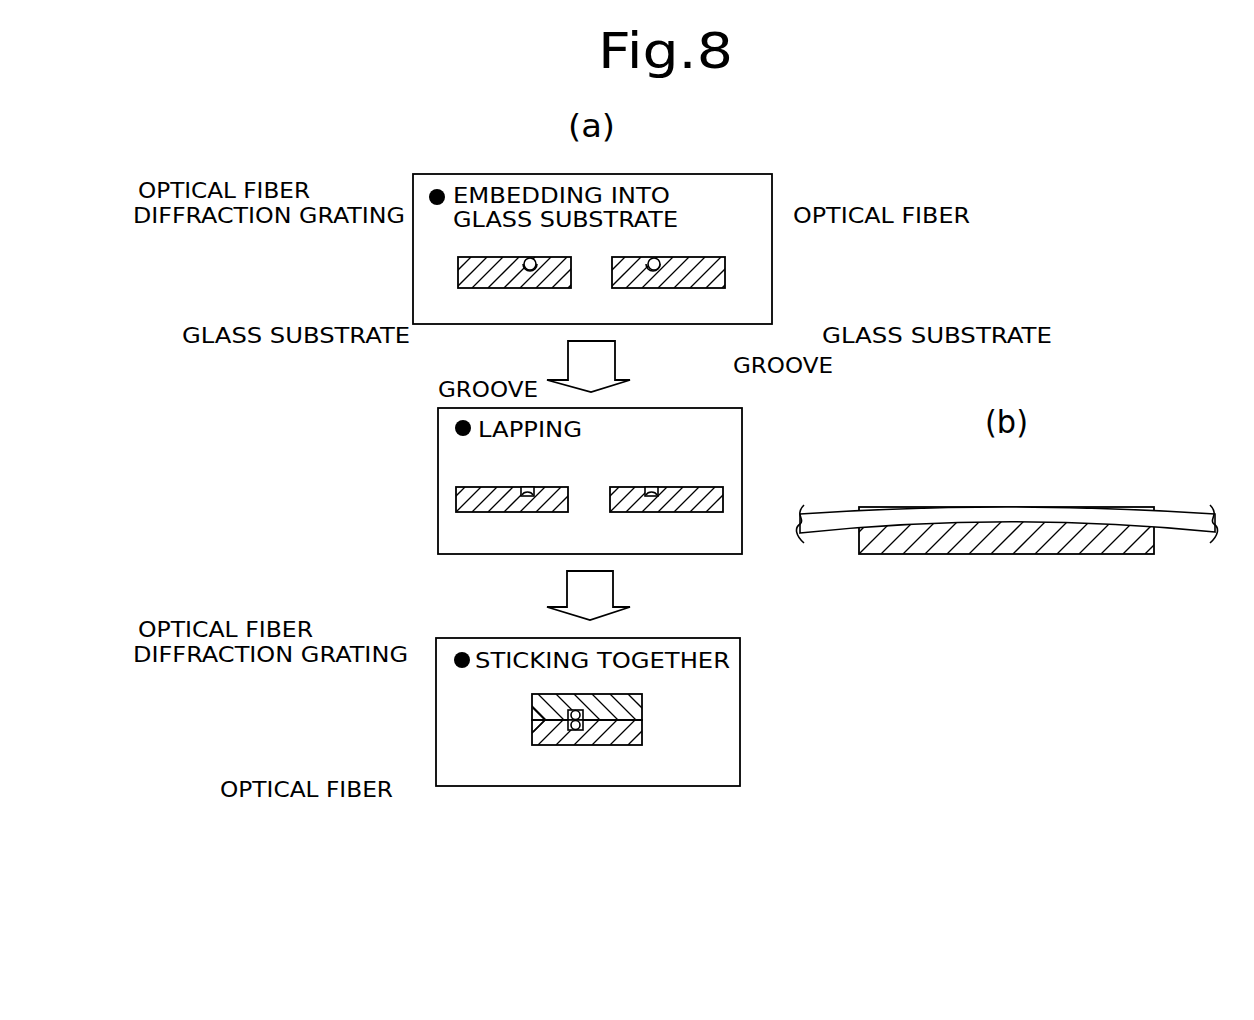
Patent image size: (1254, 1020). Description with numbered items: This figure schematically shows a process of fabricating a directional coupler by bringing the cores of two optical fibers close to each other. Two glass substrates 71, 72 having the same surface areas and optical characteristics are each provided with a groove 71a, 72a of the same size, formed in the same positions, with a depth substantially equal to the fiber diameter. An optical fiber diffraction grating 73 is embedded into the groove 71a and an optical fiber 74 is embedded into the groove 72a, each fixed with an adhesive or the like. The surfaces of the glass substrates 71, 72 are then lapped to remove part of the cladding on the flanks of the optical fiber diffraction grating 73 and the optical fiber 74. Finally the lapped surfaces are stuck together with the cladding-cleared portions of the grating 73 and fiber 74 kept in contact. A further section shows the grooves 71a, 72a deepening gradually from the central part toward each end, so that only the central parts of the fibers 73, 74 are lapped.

The glass substrate 71 is at (483, 280).
The glass substrate 72 is at (705, 283).
The groove 71a is at (526, 270).
The groove 72a is at (654, 270).
The optical fiber diffraction grating 73 is at (527, 258).
The optical fiber 74 is at (657, 258).